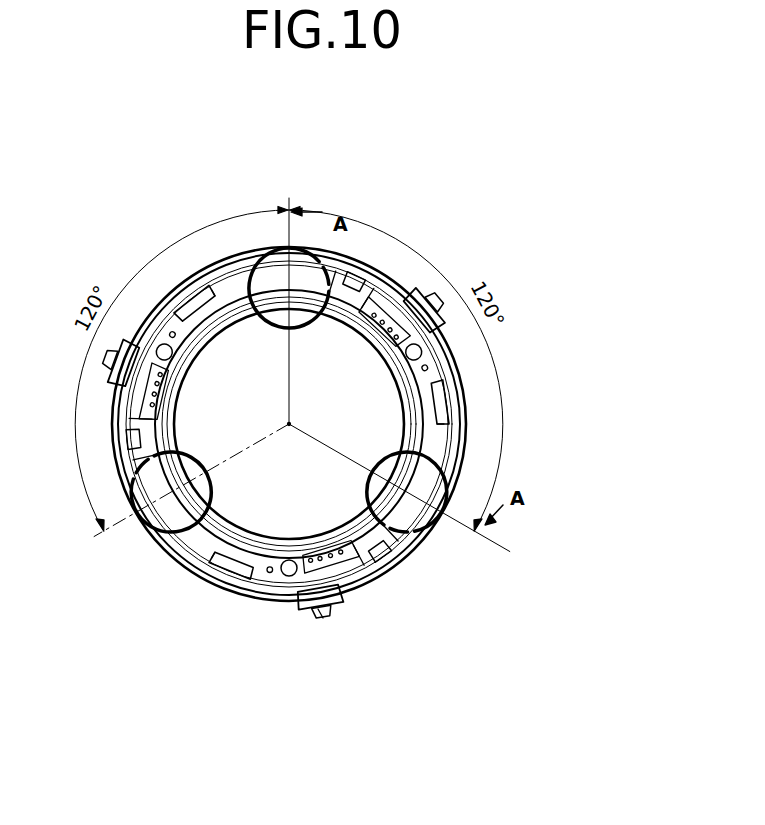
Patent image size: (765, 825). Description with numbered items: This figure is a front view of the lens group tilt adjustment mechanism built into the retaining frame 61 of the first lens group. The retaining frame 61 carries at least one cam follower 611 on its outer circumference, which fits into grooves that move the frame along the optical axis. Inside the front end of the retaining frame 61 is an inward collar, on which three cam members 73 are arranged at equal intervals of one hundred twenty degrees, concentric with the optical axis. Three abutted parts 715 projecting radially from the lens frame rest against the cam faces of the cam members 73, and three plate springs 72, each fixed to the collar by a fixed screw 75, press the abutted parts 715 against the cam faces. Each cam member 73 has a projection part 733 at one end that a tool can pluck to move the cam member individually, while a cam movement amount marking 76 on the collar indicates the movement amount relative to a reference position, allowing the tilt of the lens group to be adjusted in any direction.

The retaining frame 61 is at (170, 557).
The plate spring 72 is at (243, 558).
The cam member 73 is at (397, 550).
The fixed screw 75 is at (287, 577).
The cam movement amount marking 76 is at (321, 560).
The cam follower 611 is at (323, 612).
The abutted part 715 is at (420, 500).
The projection part 733 is at (377, 577).